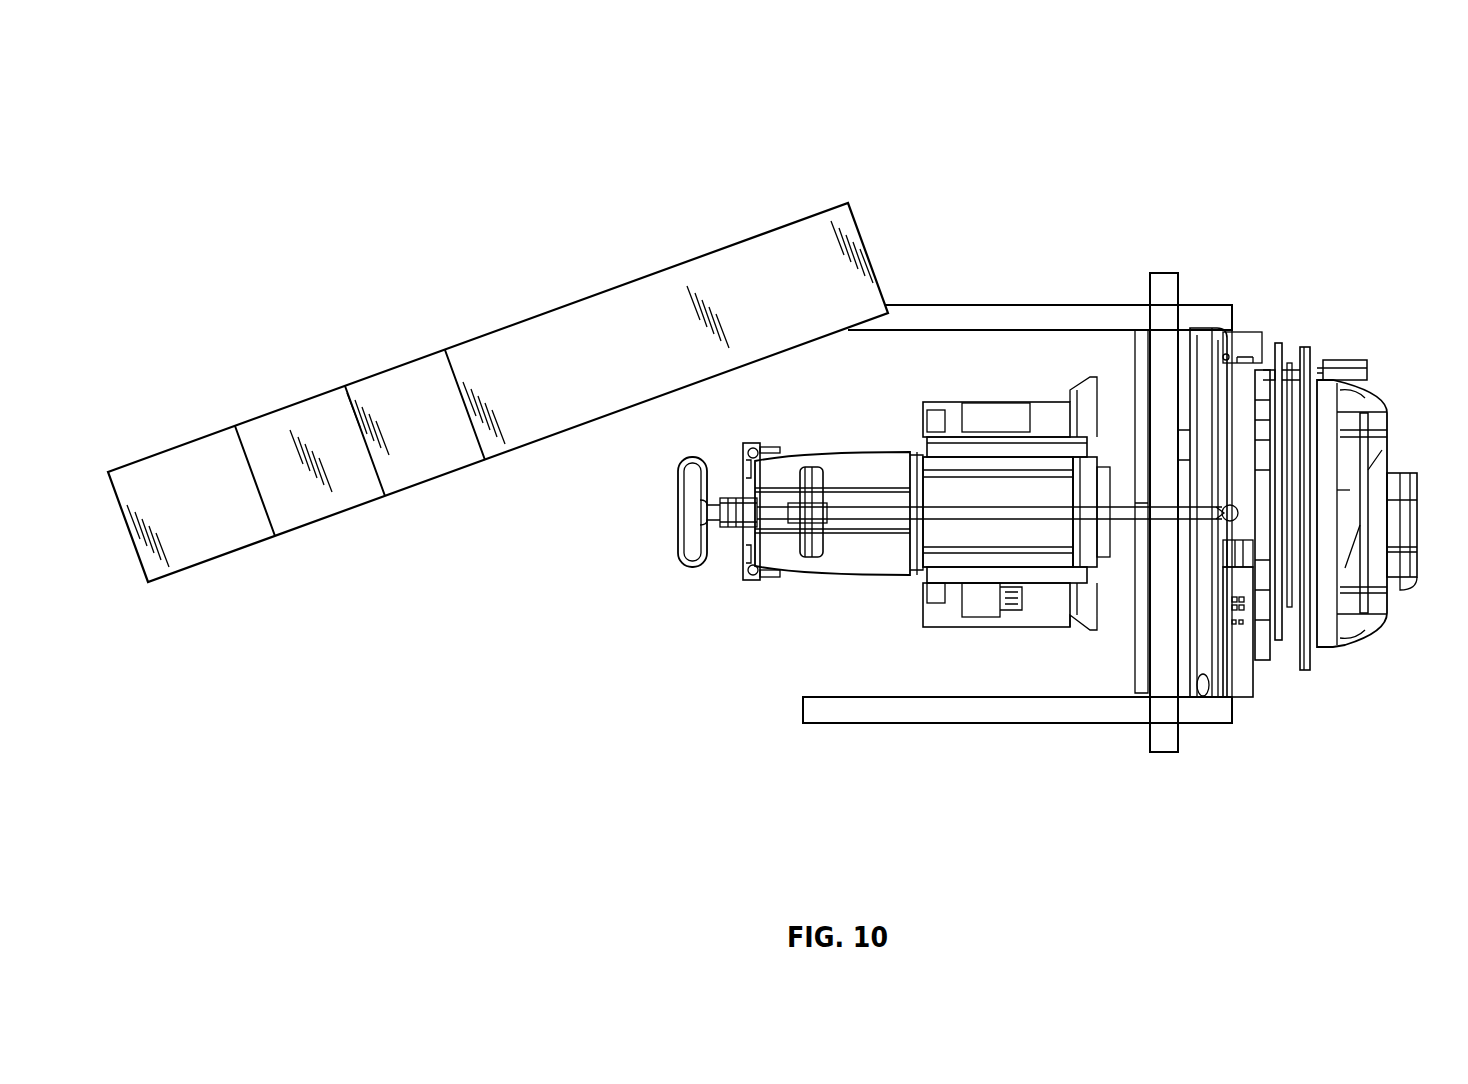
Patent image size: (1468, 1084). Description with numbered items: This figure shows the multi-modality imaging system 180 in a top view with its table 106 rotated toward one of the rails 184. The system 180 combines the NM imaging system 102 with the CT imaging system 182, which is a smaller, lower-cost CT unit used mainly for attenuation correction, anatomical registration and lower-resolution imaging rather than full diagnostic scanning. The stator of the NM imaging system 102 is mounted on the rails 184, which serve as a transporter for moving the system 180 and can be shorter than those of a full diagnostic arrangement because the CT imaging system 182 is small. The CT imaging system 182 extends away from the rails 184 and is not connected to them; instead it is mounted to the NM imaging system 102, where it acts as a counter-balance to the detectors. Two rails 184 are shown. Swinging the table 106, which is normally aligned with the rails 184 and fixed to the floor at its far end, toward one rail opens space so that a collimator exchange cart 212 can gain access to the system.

The multi-modality imaging system 180 is at (426, 106).
The NM imaging system 102 is at (1233, 203).
The CT imaging system 182 is at (1417, 232).
The rails 184 is at (925, 313).
The table 106 is at (211, 545).
The collimator exchange cart 212 is at (696, 570).